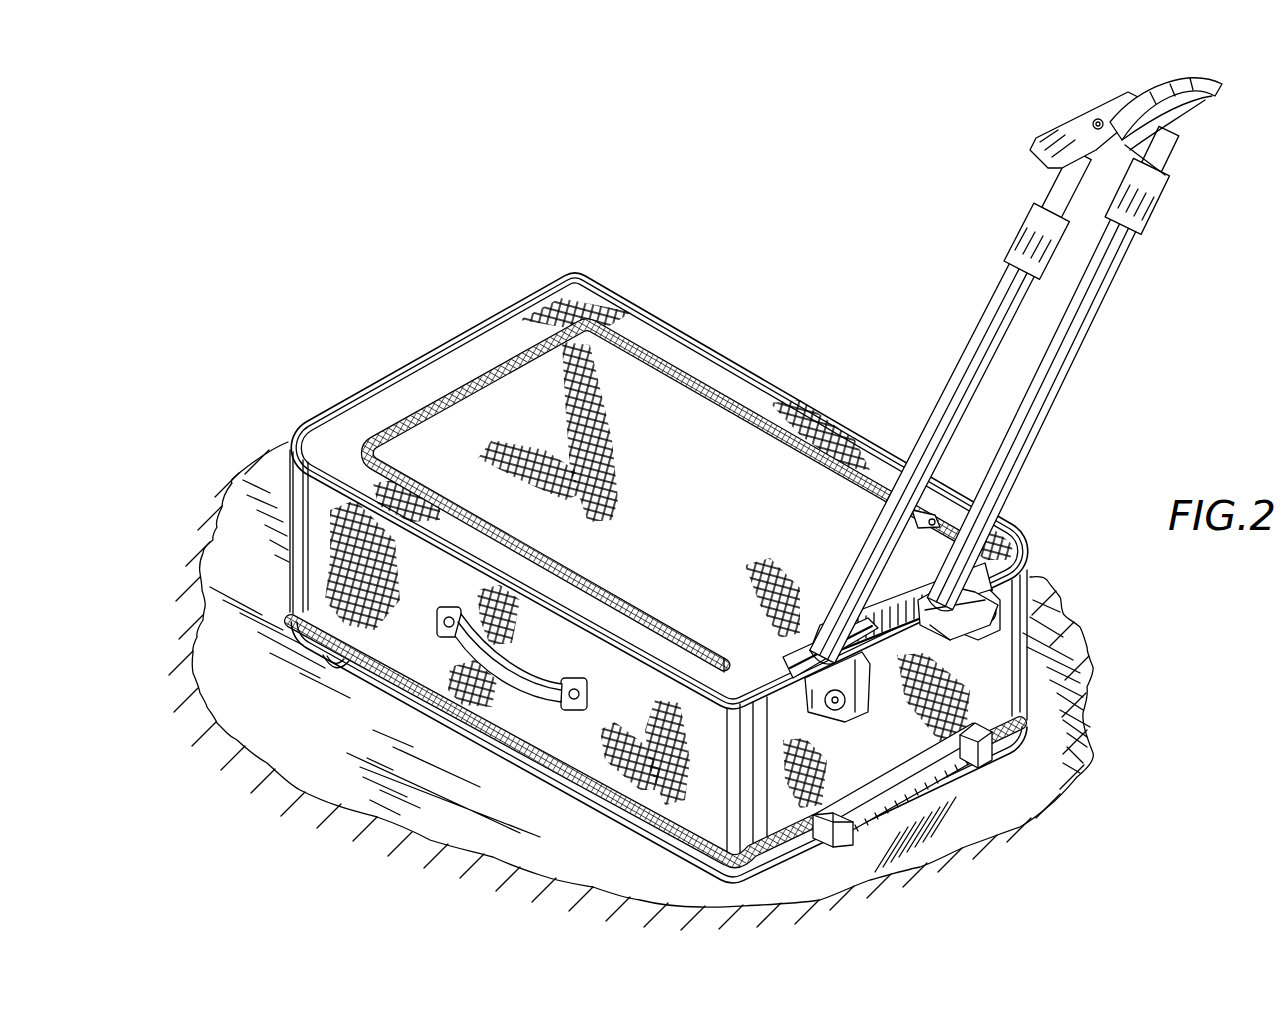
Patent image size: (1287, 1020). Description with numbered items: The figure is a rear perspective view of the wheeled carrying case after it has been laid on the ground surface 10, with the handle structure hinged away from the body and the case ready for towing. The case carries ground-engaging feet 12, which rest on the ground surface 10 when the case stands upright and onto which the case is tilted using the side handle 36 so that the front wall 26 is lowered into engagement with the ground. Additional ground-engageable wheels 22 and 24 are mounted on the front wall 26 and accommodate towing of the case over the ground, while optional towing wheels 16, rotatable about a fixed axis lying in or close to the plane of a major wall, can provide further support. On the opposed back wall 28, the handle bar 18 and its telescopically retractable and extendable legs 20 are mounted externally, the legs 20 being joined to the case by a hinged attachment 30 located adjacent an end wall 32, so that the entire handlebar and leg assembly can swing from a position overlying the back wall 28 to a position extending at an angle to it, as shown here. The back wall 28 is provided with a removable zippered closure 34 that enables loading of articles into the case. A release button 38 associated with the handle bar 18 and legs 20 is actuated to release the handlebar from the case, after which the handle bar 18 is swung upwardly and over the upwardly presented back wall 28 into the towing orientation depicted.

The ground surface 10 is at (1080, 745).
The ground-engaging feet 12 is at (983, 762).
The towing wheels 16 is at (1023, 578).
The handle bar 18 is at (1197, 74).
The telescopically retractable and extendable legs 20 is at (987, 337).
The ground-engageable wheel 22 is at (703, 880).
The ground-engageable wheel 24 is at (340, 662).
The front wall 26 is at (583, 820).
The back wall 28 is at (706, 503).
The hinged attachment 30 is at (855, 655).
The end wall 32 is at (993, 693).
The removable zippered closure 34 is at (713, 427).
The side handle 36 is at (545, 683).
The release button 38 is at (1096, 120).